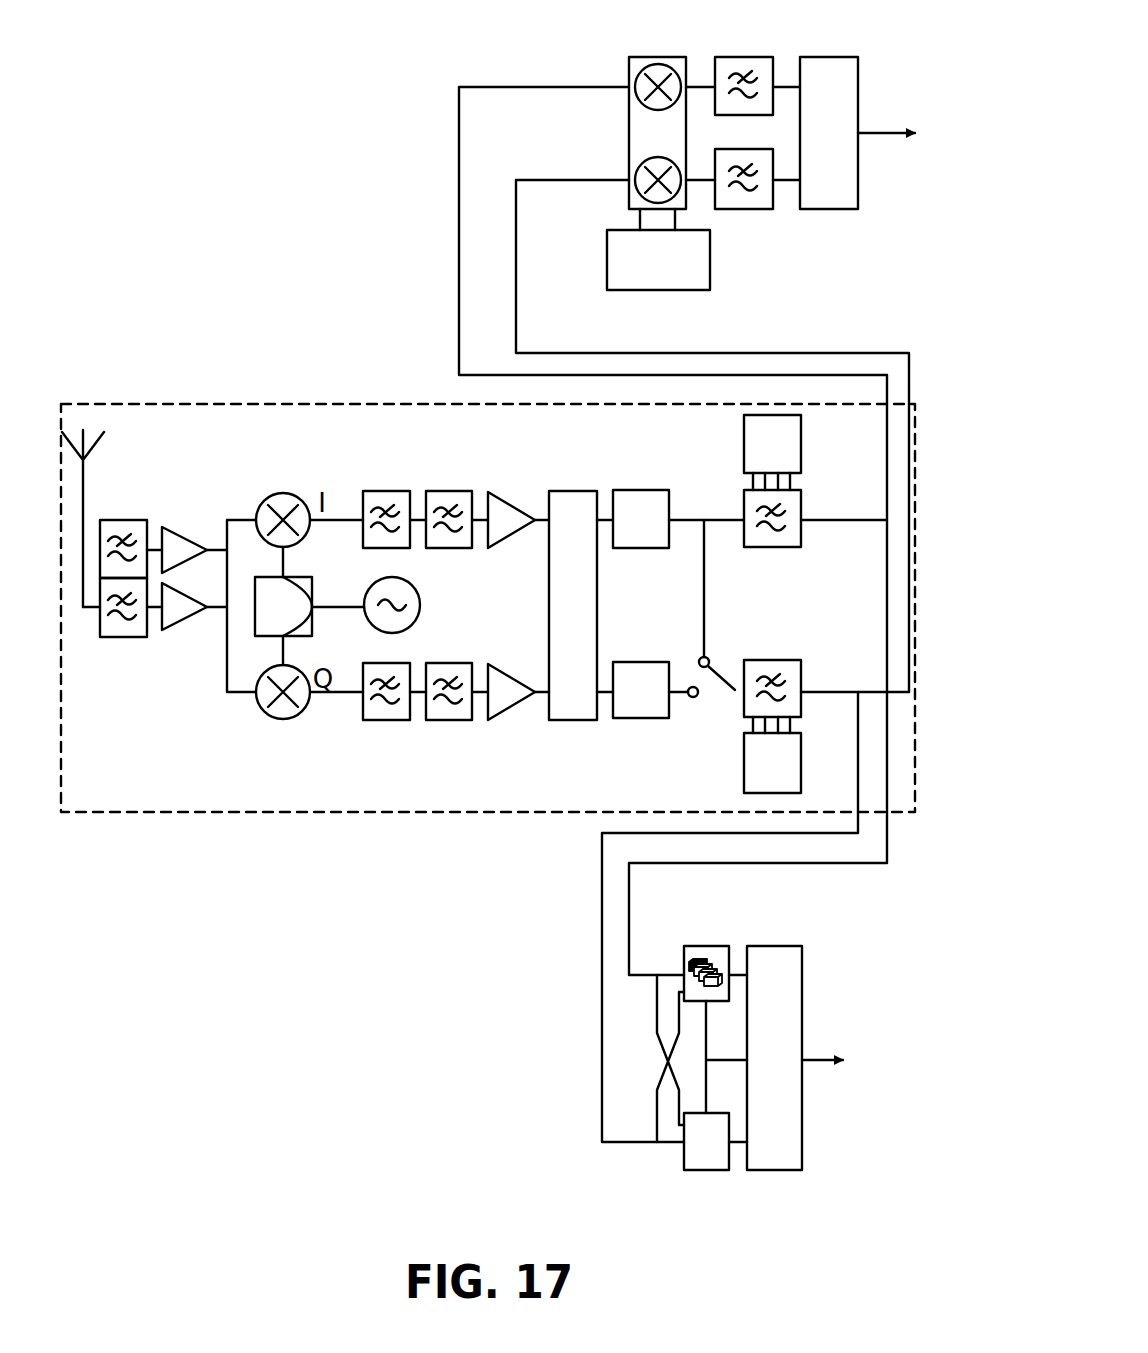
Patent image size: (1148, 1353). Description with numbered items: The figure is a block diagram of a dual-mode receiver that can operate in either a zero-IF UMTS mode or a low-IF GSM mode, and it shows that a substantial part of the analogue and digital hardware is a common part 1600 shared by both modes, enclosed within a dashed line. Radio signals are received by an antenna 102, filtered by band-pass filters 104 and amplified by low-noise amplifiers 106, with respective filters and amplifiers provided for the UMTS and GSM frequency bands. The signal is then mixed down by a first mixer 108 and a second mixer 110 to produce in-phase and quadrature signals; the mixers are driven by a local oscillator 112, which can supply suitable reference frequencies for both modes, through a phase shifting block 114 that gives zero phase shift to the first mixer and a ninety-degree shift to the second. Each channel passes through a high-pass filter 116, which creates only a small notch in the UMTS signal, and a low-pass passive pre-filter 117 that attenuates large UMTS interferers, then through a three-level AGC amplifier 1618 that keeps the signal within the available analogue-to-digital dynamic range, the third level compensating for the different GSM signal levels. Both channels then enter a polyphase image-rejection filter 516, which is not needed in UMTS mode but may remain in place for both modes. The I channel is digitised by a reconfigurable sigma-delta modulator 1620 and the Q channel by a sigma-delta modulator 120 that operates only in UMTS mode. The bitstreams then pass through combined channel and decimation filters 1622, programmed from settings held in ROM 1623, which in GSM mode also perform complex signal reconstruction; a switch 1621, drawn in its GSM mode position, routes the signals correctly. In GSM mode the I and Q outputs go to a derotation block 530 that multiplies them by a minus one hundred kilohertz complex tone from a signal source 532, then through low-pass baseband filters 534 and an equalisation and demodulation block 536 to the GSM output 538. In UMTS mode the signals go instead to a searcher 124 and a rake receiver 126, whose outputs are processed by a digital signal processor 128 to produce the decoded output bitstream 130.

The common part 1600 is at (223, 404).
The antenna 102 is at (103, 441).
The band-pass filter 104 is at (118, 523).
The low-noise amplifier 106 is at (175, 537).
The first mixer 108 is at (277, 490).
The second mixer 110 is at (258, 695).
The local oscillator 112 is at (413, 627).
The phase shifting block 114 is at (312, 633).
The high-pass filter 116 is at (383, 491).
The low-pass passive pre-filter 117 is at (443, 491).
The three-level AGC amplifier 1618 is at (502, 540).
The polyphase image-rejection filter 516 is at (572, 720).
The I sigma-delta modulator 1620 is at (635, 490).
The Q sigma-delta modulator 120 is at (635, 718).
The switch 1621 is at (708, 653).
The combined channel and decimation filter 1622 is at (798, 540).
The ROM 1623 is at (795, 463).
The derotation block 530 is at (645, 62).
The signal source 532 is at (653, 290).
The low-pass baseband filter 534 is at (732, 62).
The equalisation and demodulation block 536 is at (817, 62).
The output 538 is at (877, 133).
The searcher 124 is at (698, 1170).
The rake receiver 126 is at (698, 946).
The digital signal processor 128 is at (765, 1170).
The output bitstream 130 is at (817, 1063).